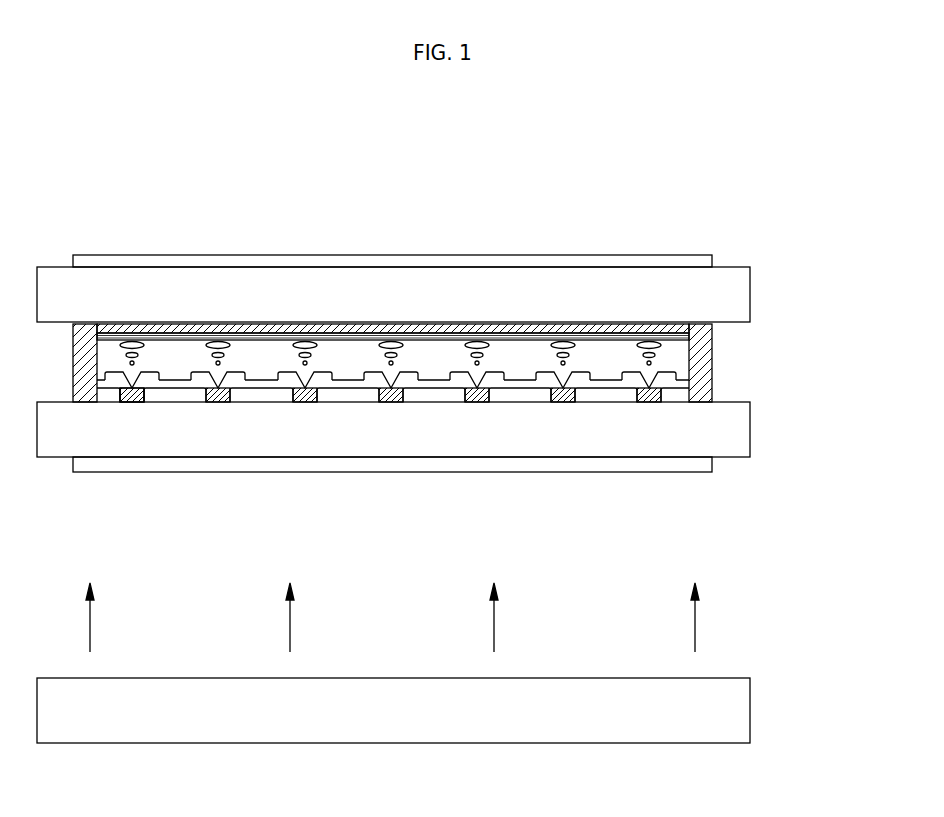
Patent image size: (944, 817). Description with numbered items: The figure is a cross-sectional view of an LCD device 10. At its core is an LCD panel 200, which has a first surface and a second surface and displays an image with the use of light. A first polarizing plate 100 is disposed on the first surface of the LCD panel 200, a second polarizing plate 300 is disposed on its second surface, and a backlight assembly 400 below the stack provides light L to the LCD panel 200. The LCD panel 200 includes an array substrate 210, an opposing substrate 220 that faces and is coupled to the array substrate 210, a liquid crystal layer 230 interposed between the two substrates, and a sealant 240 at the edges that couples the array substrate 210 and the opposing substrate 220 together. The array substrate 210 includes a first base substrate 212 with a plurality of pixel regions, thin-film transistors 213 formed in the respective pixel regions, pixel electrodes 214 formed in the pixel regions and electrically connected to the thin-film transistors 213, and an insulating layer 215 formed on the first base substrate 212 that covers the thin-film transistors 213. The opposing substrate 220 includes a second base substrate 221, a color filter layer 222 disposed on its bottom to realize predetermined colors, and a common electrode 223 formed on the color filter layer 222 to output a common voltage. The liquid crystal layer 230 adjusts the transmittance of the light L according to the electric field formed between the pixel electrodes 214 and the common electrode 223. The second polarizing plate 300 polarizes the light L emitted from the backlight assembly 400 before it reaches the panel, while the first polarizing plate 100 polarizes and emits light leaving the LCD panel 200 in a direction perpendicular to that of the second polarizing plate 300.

The LCD device 10 is at (450, 133).
The first polarizing plate 100 is at (585, 257).
The LCD panel 200 is at (825, 297).
The array substrate 210 is at (427, 456).
The first base substrate 212 is at (88, 443).
The thin-film transistors 213 is at (141, 456).
The pixel electrodes 214 is at (158, 378).
The insulating layer 215 is at (187, 393).
The opposing substrate 220 is at (427, 243).
The second base substrate 221 is at (92, 283).
The color filter layer 222 is at (157, 330).
The common electrode 223 is at (247, 338).
The liquid crystal layer 230 is at (672, 353).
The sealant 240 is at (700, 362).
The second polarizing plate 300 is at (593, 472).
The backlight assembly 400 is at (735, 710).
The light L is at (697, 630).